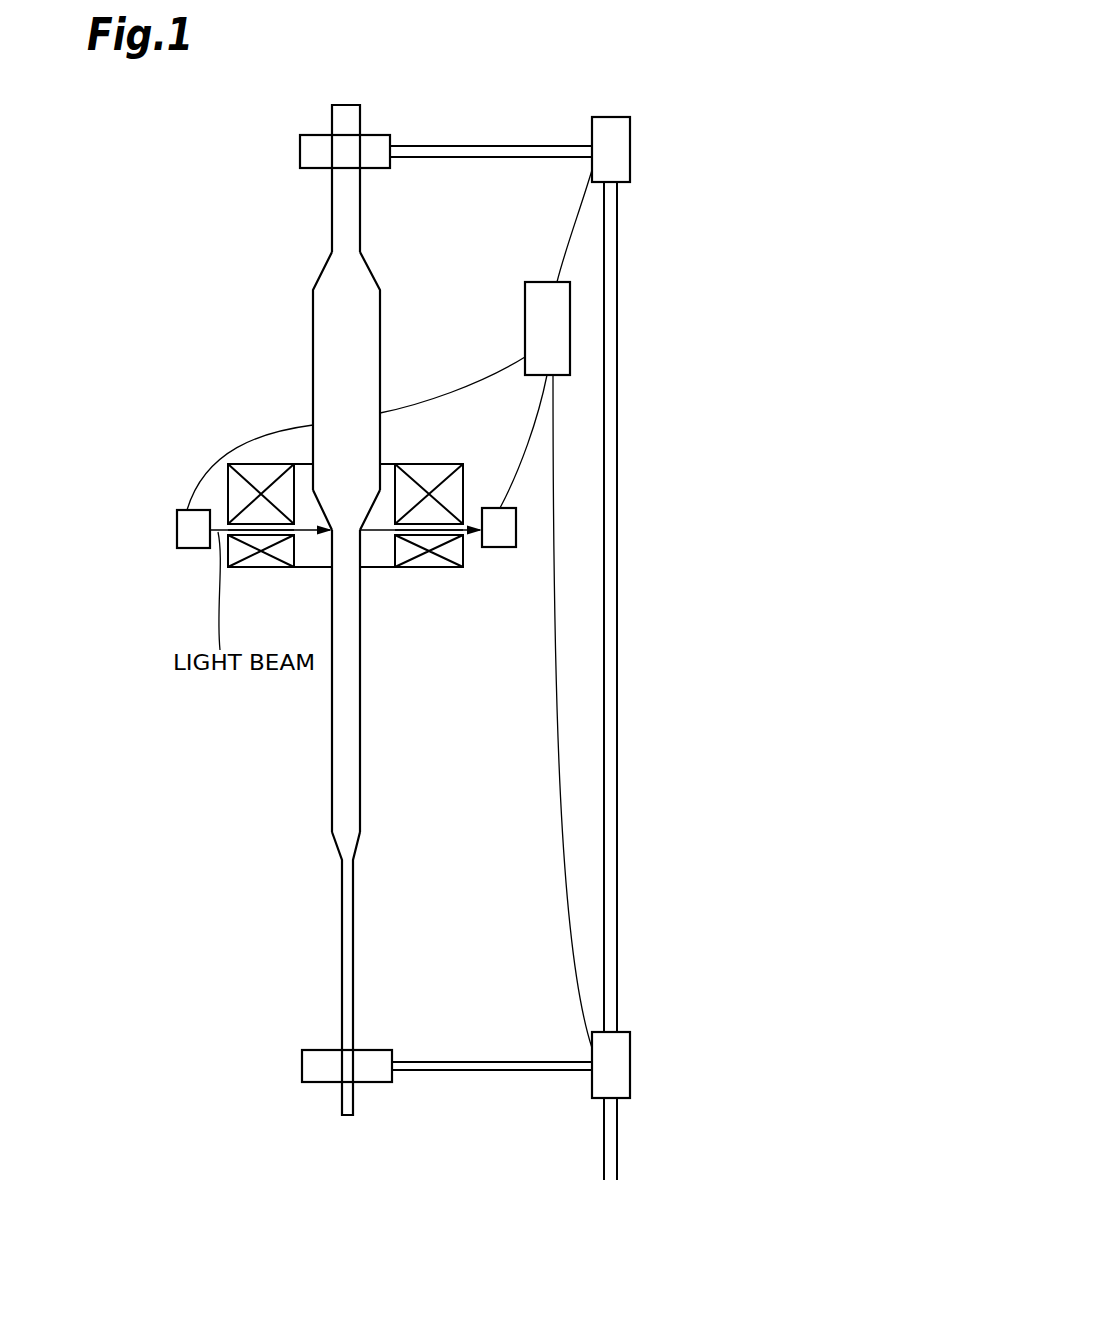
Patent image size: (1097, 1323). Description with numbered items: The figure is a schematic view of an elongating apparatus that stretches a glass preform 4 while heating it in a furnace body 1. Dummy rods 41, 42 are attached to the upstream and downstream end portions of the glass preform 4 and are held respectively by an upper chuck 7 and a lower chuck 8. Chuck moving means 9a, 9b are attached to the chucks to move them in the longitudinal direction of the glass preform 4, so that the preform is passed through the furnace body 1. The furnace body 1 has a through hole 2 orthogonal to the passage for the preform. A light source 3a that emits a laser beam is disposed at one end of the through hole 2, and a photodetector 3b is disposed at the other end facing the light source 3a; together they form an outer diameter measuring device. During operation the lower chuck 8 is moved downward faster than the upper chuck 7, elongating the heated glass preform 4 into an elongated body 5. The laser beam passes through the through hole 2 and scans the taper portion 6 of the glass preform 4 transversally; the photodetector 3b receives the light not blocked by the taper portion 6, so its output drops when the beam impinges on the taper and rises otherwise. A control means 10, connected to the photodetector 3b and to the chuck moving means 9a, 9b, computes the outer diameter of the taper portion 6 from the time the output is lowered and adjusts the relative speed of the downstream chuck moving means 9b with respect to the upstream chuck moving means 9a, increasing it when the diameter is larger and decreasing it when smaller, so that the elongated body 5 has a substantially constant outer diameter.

The furnace body 1 is at (252, 466).
The through hole 2 is at (223, 523).
The light source 3a is at (180, 535).
The photodetector 3b is at (516, 528).
The glass preform 4 is at (318, 300).
The dummy rod 41 is at (360, 212).
The dummy rod 42 is at (353, 985).
The elongated body 5 is at (332, 778).
The taper portion 6 is at (371, 512).
The upper chuck 7 is at (310, 140).
The lower chuck 8 is at (380, 1078).
The chuck moving means 9a is at (630, 148).
The chuck moving means 9b is at (630, 1048).
The control means 10 is at (570, 327).